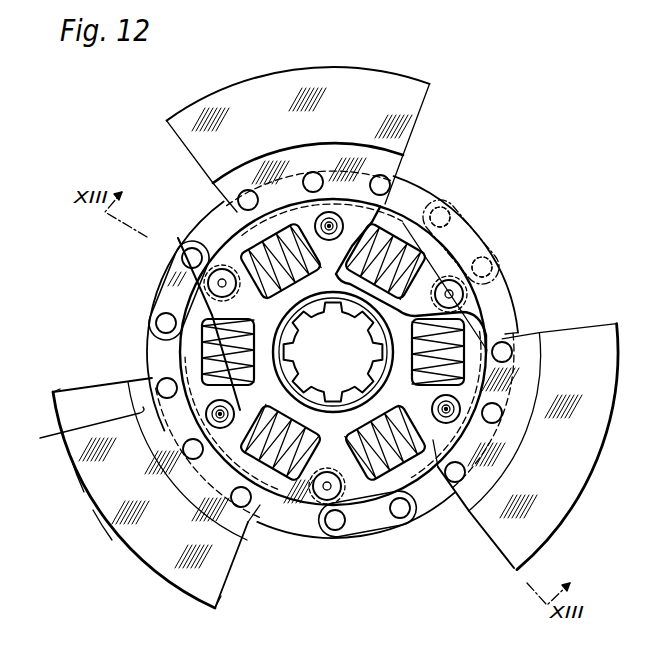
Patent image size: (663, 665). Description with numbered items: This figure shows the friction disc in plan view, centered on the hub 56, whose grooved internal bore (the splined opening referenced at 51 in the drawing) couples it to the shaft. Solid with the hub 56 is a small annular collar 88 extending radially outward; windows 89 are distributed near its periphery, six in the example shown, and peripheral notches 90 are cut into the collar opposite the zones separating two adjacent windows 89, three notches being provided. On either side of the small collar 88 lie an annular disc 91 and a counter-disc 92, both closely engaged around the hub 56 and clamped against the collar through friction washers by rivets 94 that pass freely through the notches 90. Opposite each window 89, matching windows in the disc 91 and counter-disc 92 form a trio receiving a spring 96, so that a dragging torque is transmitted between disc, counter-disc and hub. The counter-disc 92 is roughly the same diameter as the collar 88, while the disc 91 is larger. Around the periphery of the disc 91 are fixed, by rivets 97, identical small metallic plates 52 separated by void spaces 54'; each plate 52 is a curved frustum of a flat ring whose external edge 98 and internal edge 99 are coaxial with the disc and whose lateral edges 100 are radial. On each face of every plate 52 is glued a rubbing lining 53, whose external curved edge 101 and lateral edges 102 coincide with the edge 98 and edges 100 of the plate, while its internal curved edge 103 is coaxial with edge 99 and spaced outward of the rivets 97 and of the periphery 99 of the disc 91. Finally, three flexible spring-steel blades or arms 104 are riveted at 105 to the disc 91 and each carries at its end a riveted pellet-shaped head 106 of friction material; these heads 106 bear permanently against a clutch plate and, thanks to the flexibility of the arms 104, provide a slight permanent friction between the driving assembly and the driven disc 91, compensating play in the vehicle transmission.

The hub 51 is at (352, 374).
The small plate 52 is at (392, 166).
The rubbing lining 53 is at (332, 72).
The void space 54' is at (323, 362).
The hub 56 is at (374, 393).
The annular collar 88 is at (478, 314).
The window 89 is at (410, 237).
The peripheral notch 90 is at (487, 282).
The disc 91 is at (512, 330).
The counter-disc 92 is at (445, 218).
The rivet 94 is at (220, 268).
The spring 96 is at (290, 288).
The rivet 97 is at (172, 395).
The external edge 98 is at (77, 477).
The internal edge 99 is at (288, 488).
The lateral edge 100 is at (148, 370).
The external curved edge 101 is at (100, 524).
The lateral edge 102 is at (68, 386).
The internal curved edge 103 is at (84, 424).
The flexible blade 104 is at (160, 271).
The rivet 105 is at (188, 250).
The pellet-shaped head 106 is at (318, 234).